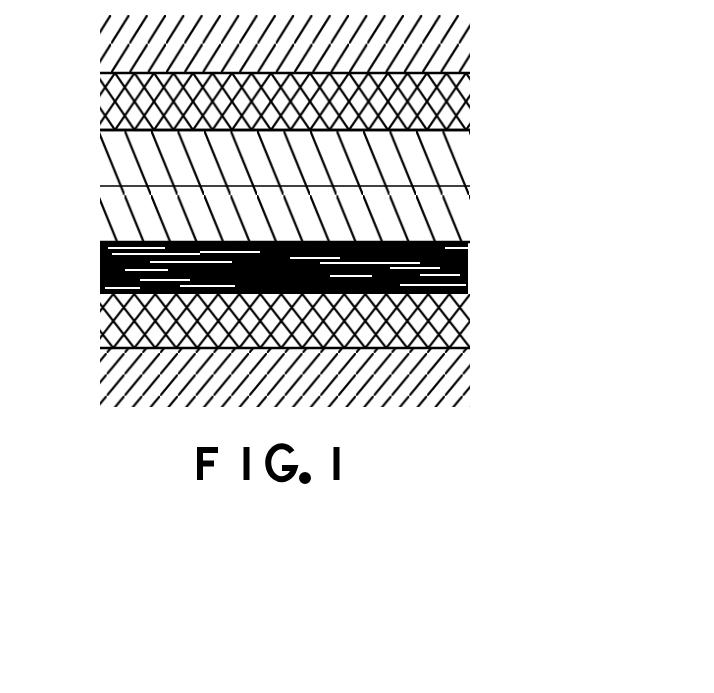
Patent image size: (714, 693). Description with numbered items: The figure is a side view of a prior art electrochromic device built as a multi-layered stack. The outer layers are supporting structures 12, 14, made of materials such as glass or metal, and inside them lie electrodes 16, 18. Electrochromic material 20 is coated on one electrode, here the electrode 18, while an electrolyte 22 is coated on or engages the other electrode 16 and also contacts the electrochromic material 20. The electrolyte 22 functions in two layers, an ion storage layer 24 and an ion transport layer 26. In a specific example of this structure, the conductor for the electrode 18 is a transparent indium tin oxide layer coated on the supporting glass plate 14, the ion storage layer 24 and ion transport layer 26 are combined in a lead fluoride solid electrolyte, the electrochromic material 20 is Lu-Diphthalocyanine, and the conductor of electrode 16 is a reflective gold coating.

The supporting structure 12 is at (478, 57).
The supporting structure 14 is at (472, 385).
The electrode 16 is at (473, 110).
The electrode 18 is at (470, 323).
The electrochromic material 20 is at (462, 274).
The electrolyte 22 is at (311, 186).
The ion storage layer 24 is at (99, 164).
The ion transport layer 26 is at (98, 216).